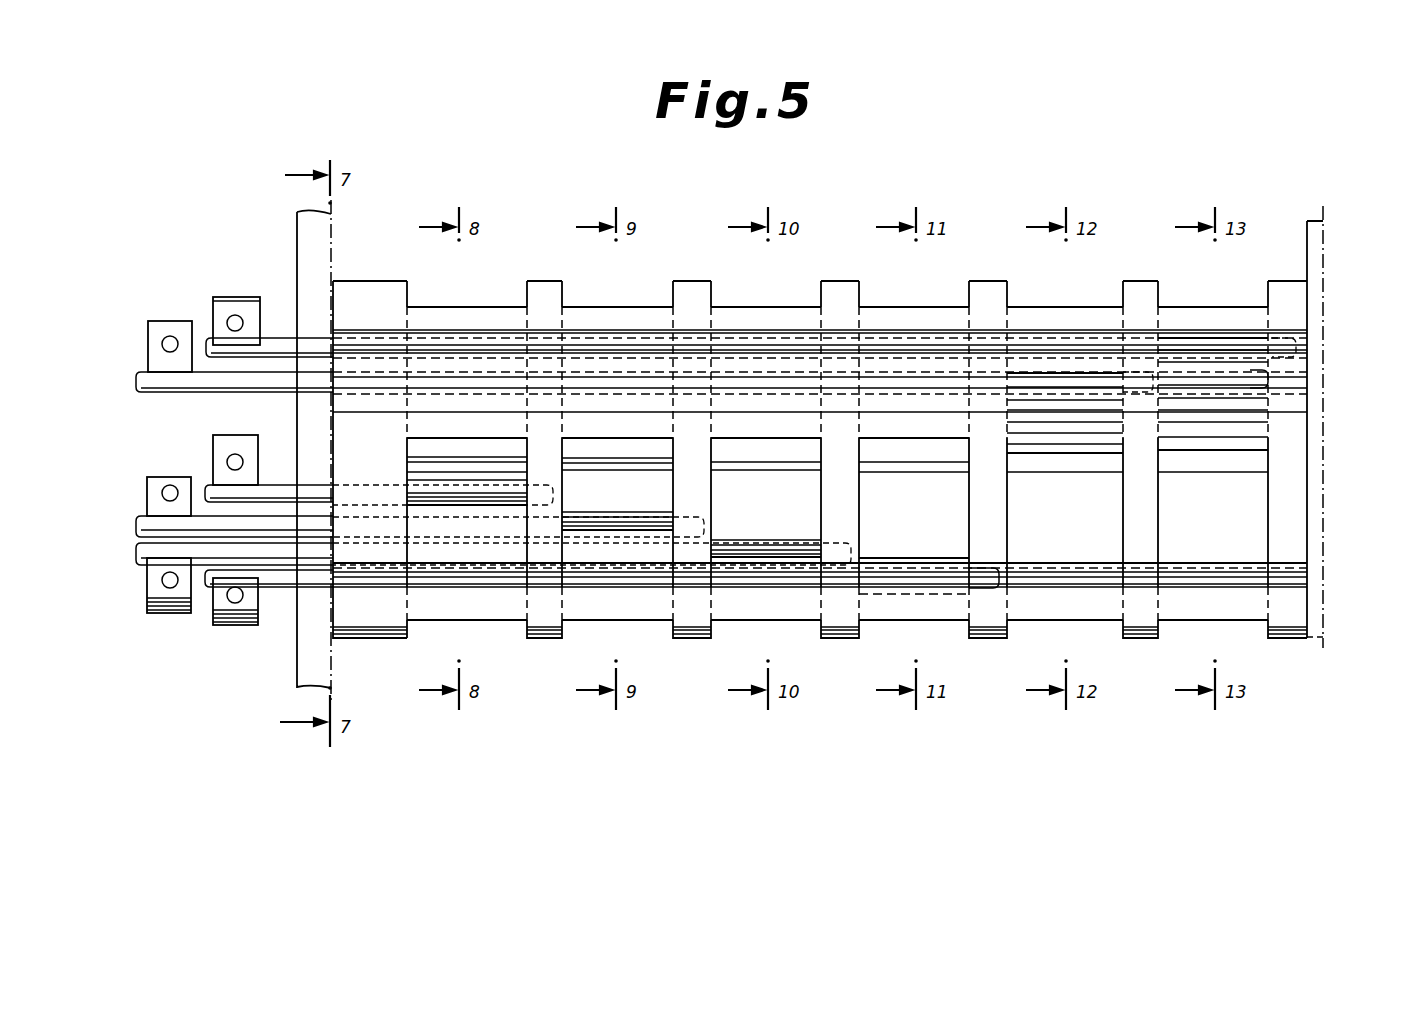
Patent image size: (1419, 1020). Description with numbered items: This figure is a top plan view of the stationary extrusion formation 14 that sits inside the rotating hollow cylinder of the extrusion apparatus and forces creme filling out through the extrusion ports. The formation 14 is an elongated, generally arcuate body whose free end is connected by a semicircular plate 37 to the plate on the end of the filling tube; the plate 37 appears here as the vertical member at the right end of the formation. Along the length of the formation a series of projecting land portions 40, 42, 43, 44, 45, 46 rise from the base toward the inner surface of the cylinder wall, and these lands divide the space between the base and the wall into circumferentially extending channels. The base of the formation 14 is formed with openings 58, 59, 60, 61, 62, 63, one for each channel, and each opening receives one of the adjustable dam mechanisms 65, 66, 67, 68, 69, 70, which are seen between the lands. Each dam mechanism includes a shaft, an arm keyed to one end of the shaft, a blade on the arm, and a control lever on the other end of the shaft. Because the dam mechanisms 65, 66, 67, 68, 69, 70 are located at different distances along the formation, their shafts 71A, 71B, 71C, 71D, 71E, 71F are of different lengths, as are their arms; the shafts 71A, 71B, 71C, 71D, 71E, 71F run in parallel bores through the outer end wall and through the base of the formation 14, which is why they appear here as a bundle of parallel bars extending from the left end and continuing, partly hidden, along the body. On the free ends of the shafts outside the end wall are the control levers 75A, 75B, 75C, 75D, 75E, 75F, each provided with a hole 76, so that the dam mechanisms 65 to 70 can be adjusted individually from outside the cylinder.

The extrusion formation 14 is at (811, 652).
The semicircular plate 37 is at (1322, 413).
The land portion 40 is at (381, 628).
The land portion 42 is at (704, 638).
The land portion 43 is at (848, 638).
The land portion 44 is at (544, 640).
The land portion 45 is at (1150, 628).
The land portion 46 is at (1290, 618).
The opening 58 is at (527, 448).
The opening 59 is at (673, 450).
The opening 60 is at (821, 449).
The opening 61 is at (969, 455).
The opening 62 is at (1123, 381).
The opening 63 is at (1268, 380).
The adjustable dam mechanism 65 is at (478, 478).
The adjustable dam mechanism 66 is at (618, 508).
The adjustable dam mechanism 67 is at (757, 497).
The adjustable dam mechanism 68 is at (915, 512).
The adjustable dam mechanism 69 is at (1070, 415).
The adjustable dam mechanism 70 is at (1250, 428).
The shaft 71A is at (281, 485).
The shaft 71B is at (140, 525).
The shaft 71C is at (140, 556).
The shaft 71D is at (281, 580).
The shaft 71E is at (140, 378).
The shaft 71F is at (290, 340).
The control lever 75A is at (230, 438).
The control lever 75B is at (150, 492).
The control lever 75C is at (165, 598).
The control lever 75D is at (225, 612).
The control lever 75E is at (160, 322).
The control lever 75F is at (220, 298).
The hole 76 is at (237, 322).